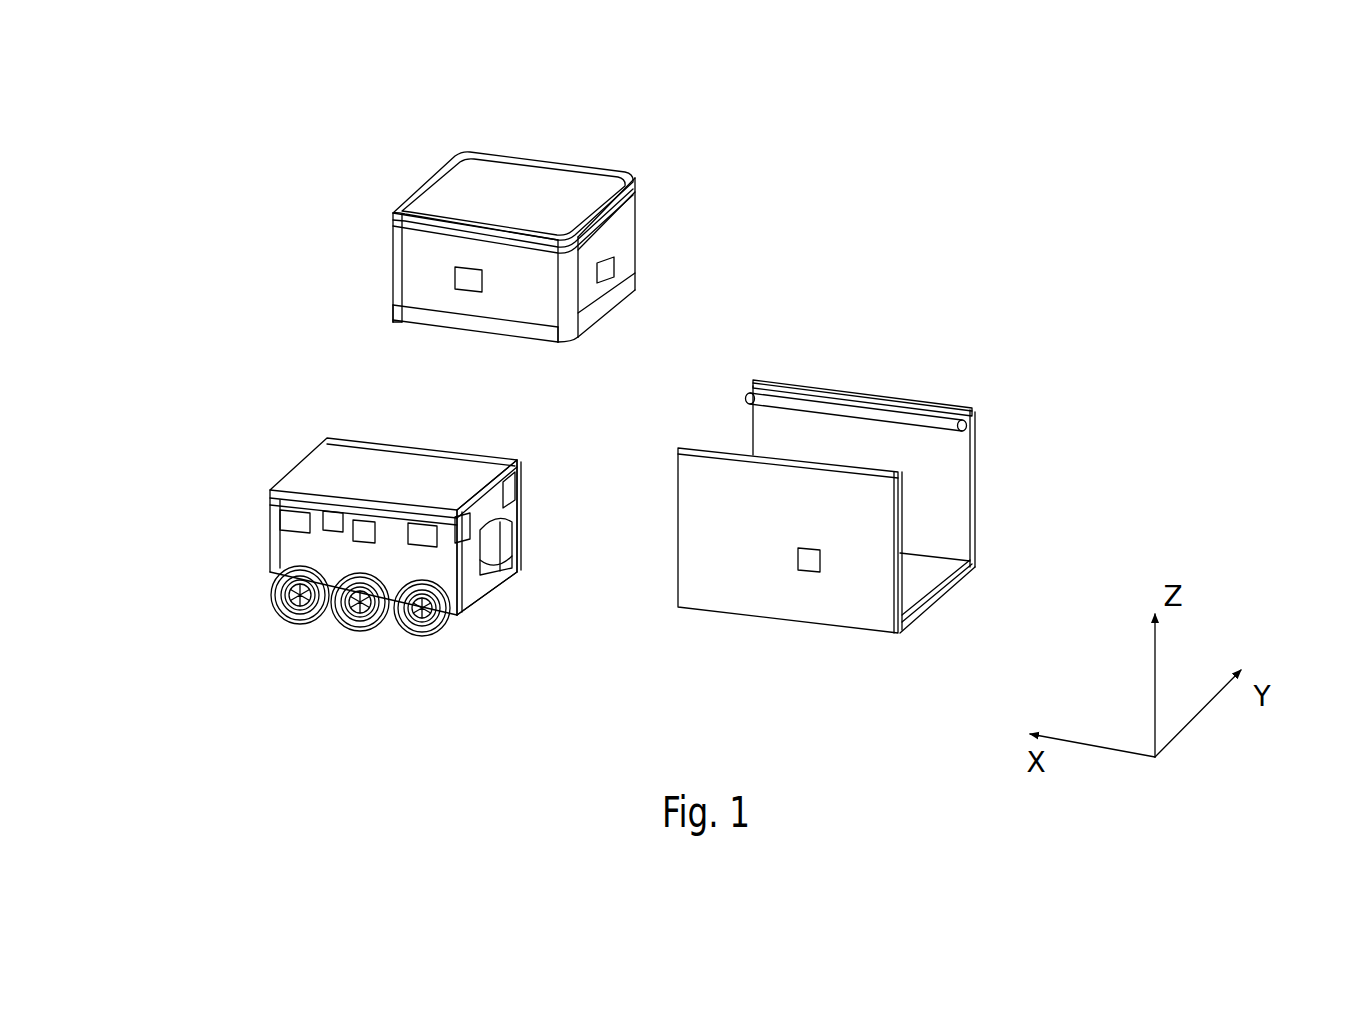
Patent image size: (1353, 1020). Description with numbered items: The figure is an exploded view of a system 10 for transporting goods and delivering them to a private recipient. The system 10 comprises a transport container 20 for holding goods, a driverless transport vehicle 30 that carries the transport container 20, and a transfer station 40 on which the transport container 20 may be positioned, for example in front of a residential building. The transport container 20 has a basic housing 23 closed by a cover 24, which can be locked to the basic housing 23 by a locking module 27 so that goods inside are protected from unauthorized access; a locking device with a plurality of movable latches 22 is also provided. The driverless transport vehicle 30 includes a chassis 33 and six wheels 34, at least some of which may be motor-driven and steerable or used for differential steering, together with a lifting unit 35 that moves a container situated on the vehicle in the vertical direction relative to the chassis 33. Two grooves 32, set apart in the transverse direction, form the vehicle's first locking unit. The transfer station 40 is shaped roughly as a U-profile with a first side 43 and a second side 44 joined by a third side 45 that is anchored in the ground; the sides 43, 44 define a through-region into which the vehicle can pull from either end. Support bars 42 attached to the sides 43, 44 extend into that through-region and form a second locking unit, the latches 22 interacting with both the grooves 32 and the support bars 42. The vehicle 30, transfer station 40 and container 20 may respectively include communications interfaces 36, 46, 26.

The system 10 is at (1060, 223).
The transport container 20 is at (412, 245).
The movable latches 22 is at (396, 325).
The basic housing 23 is at (602, 248).
The cover 24 is at (536, 174).
The communications interface 26 is at (468, 282).
The locking module 27 is at (607, 272).
The driverless transport vehicle 30 is at (333, 553).
The grooves 32 is at (357, 500).
The chassis 33 is at (502, 512).
The wheels 34 is at (498, 574).
The lifting unit 35 is at (312, 513).
The communications interface 36 is at (368, 528).
The transfer station 40 is at (708, 538).
The support bar 42 is at (868, 413).
The first side 43 is at (802, 432).
The second side 44 is at (685, 483).
The third side 45 is at (922, 578).
The communications interface 46 is at (809, 564).